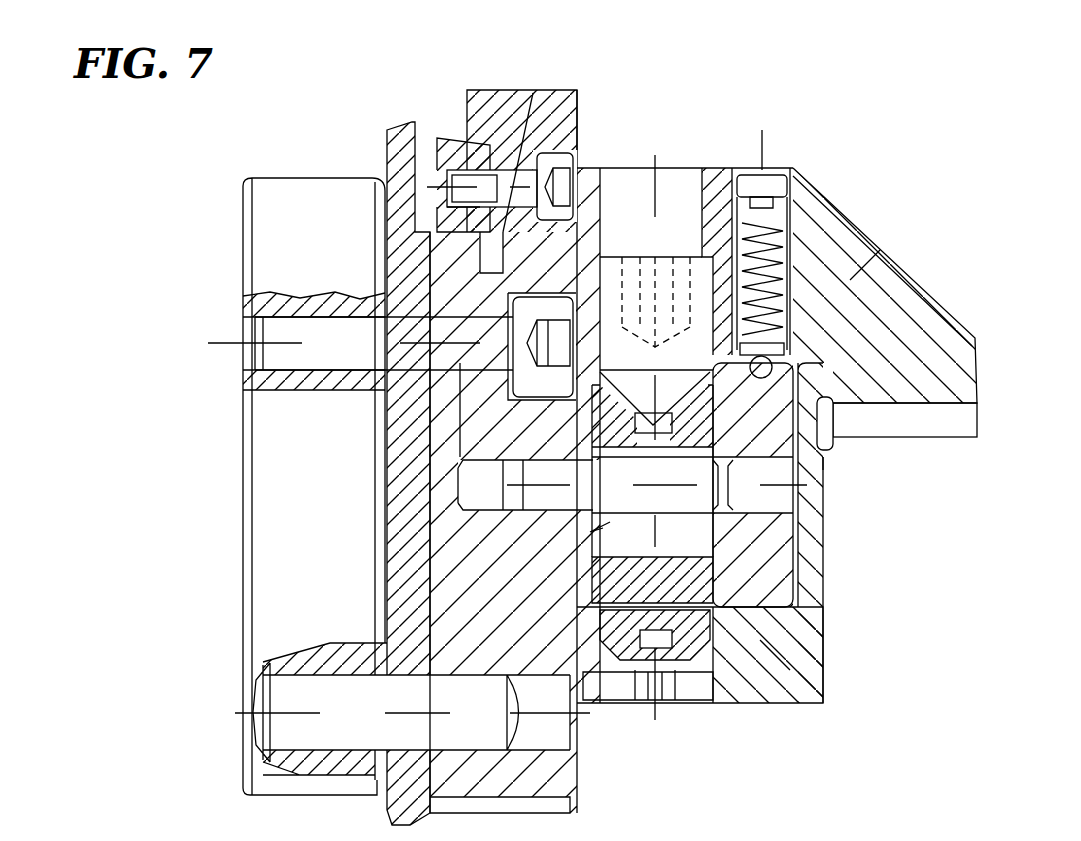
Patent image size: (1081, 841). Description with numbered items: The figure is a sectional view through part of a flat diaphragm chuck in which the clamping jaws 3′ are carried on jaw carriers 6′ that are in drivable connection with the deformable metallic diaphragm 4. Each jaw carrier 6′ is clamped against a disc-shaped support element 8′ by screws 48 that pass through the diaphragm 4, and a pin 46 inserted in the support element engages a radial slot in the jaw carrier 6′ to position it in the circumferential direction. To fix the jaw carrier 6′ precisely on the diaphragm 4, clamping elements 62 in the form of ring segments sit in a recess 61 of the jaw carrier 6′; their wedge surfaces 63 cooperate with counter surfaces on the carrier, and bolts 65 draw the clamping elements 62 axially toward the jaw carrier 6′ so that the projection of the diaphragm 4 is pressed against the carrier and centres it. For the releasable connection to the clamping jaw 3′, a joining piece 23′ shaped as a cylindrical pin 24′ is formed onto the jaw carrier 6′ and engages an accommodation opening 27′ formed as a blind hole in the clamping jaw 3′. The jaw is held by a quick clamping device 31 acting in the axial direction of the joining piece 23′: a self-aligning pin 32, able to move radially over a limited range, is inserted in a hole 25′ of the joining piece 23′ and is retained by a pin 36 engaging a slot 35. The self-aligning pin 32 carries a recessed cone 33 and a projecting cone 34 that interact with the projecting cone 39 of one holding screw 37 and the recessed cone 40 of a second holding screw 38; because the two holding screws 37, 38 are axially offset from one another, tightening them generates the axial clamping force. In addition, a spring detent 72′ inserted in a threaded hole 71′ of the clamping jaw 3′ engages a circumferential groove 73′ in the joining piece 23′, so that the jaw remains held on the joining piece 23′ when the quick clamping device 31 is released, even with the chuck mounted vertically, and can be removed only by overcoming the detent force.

The clamping jaws 3′ is at (847, 214).
The diaphragm 4 is at (417, 150).
The jaw carriers 6′ is at (493, 92).
The disc-shaped support elements 8′ is at (270, 260).
The joining piece 23′ is at (793, 570).
The cylindrical pin 24′ is at (835, 425).
The holes 25′ is at (590, 532).
The accommodation openings 27′ is at (823, 618).
The quick clamping devices 31 is at (700, 156).
The self-aligning pin 32 is at (773, 410).
The recessed cone 33 is at (772, 360).
The projecting cone 34 is at (610, 680).
The slots 35 is at (713, 533).
The pins 36 is at (707, 495).
The holding screw 37 is at (622, 257).
The holding screw 38 is at (703, 707).
The projecting cone 39 is at (670, 403).
The recessed cone 40 is at (757, 595).
The pin 46 is at (295, 700).
The screws 48 is at (493, 357).
The recess 61 is at (497, 157).
The clamping elements 62 is at (455, 213).
The wedge surfaces 63 is at (453, 140).
The bolts 65 is at (550, 167).
The threaded holes 71′ is at (767, 177).
The spring detents 72′ is at (813, 306).
The circumferential grooves 73′ is at (820, 667).